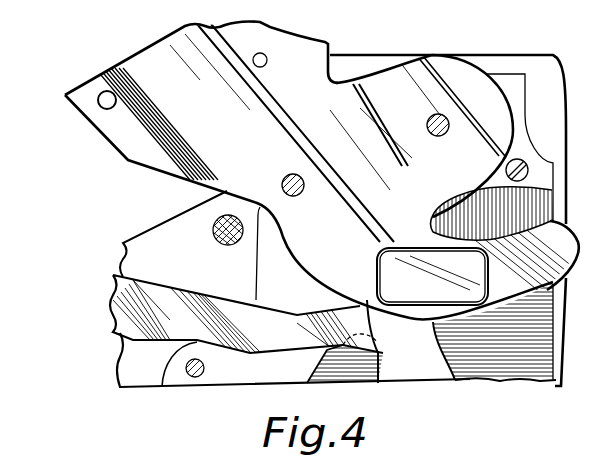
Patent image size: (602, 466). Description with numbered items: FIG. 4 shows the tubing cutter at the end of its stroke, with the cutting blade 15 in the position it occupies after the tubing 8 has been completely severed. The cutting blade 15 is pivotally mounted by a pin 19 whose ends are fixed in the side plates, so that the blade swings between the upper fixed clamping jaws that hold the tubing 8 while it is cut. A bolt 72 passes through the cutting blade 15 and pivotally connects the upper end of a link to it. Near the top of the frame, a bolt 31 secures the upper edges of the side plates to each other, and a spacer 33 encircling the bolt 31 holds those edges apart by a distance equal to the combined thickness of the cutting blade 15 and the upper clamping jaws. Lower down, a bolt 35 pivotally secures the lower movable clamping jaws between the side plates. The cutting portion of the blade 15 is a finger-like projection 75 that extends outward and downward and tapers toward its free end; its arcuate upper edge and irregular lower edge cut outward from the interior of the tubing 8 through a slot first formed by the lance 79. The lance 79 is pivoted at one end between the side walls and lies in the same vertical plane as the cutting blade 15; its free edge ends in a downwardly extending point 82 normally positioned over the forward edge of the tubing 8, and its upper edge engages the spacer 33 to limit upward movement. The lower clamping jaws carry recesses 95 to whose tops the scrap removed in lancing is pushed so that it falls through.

The cutting blade 15 is at (374, 148).
The pin 19 is at (431, 134).
The bolt 72 is at (287, 176).
The bolt 31 is at (213, 232).
The spacer 33 is at (228, 246).
The tubing 8 is at (373, 279).
The finger-like projection 75 is at (504, 281).
The lance 79 is at (235, 315).
The bolt 35 is at (206, 367).
The point 82 is at (381, 353).
The recesses 95 is at (360, 377).